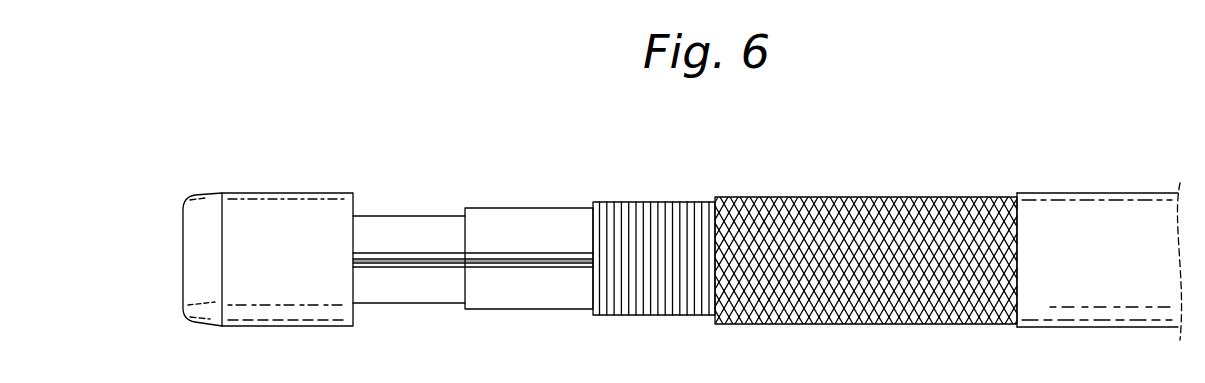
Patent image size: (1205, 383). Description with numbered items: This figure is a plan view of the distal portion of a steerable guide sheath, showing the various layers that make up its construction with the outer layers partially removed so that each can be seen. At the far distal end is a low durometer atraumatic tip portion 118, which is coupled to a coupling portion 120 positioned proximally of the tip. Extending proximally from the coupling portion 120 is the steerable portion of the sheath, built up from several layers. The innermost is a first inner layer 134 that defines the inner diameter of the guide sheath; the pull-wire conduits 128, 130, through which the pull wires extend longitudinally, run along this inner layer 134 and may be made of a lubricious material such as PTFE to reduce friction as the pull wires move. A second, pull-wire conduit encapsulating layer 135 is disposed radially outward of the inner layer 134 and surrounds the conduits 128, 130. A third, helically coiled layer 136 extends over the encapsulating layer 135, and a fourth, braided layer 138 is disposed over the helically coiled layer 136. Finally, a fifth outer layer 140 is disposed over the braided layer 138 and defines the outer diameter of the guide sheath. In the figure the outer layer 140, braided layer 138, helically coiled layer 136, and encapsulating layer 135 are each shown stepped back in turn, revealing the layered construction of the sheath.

The atraumatic tip portion 118 is at (207, 195).
The coupling portion 120 is at (262, 193).
The pull-wire conduit 128 is at (403, 254).
The pull-wire conduit 130 is at (422, 268).
The inner layer 134 is at (366, 216).
The pull-wire conduit encapsulating layer 135 is at (527, 208).
The helically coiled layer 136 is at (647, 203).
The braided layer 138 is at (907, 197).
The outer layer 140 is at (1097, 193).